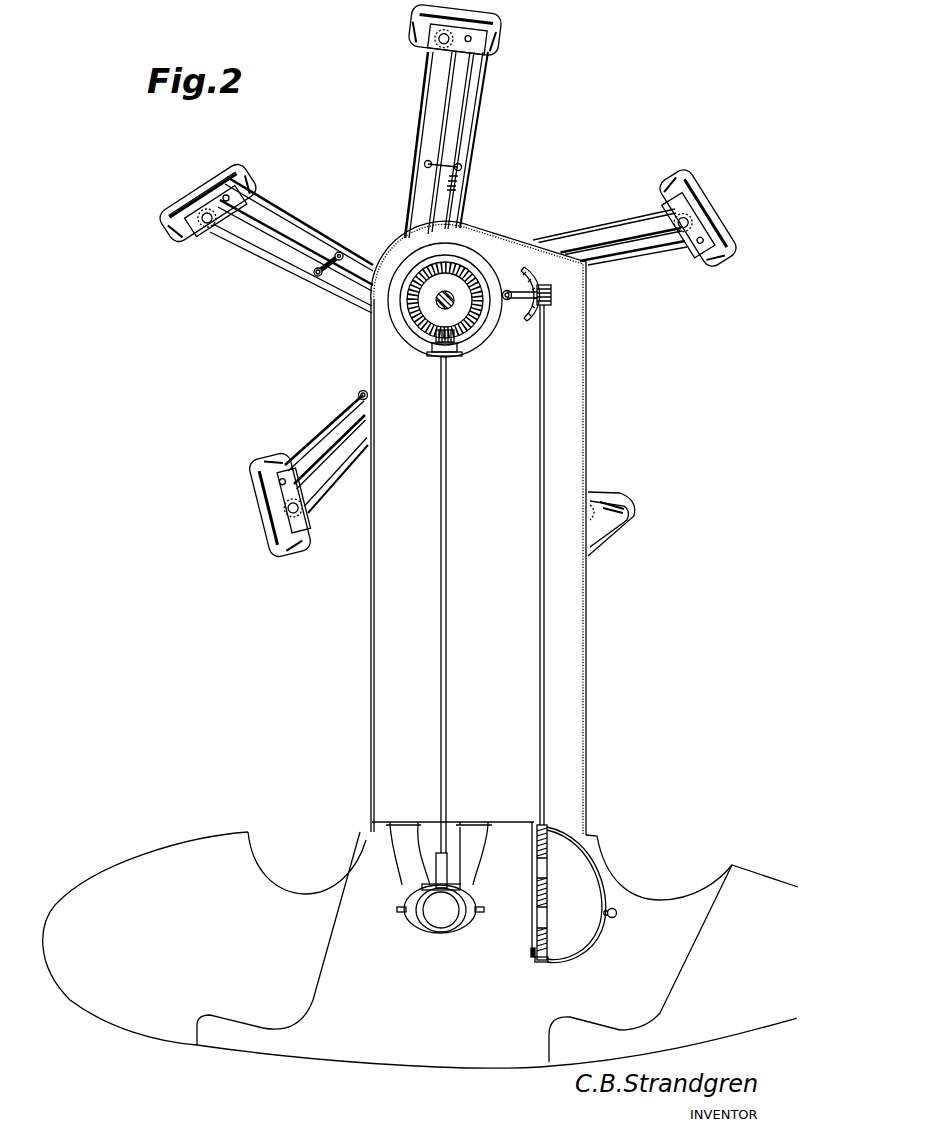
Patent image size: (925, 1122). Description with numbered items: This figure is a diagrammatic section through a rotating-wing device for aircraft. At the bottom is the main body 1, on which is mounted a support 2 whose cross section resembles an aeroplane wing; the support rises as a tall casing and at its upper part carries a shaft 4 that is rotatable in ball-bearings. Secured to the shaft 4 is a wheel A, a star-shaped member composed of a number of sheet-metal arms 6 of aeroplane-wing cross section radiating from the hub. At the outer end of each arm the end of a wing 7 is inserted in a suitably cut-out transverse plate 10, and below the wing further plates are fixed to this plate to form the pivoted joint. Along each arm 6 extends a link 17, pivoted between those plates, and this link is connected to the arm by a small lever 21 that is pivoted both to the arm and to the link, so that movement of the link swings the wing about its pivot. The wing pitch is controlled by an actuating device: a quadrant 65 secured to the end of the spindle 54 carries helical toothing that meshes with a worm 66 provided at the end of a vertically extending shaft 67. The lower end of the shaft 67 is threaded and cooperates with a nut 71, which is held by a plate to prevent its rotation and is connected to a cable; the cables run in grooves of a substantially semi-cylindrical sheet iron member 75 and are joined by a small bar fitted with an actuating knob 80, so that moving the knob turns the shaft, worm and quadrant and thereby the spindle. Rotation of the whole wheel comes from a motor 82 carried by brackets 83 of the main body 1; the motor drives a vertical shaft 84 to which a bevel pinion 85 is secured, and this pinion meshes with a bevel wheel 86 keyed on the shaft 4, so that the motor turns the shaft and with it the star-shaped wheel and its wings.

The main body 1 is at (438, 1060).
The support 2 is at (576, 694).
The shaft 4 is at (449, 296).
The arms 6 is at (290, 256).
The wings 7 is at (178, 218).
The transverse plates 10 is at (210, 182).
The link 17 is at (328, 250).
The small lever 21 is at (331, 263).
The spindle 54 is at (508, 291).
The quadrant 65 is at (522, 322).
The worm 66 is at (553, 296).
The vertically extending shaft 67 is at (546, 351).
The nut 71 is at (540, 916).
The sheet iron member 75 is at (596, 939).
The actuating knob 80 is at (616, 910).
The motor 82 is at (441, 918).
The brackets 83 is at (468, 872).
The vertical shaft 84 is at (446, 693).
The bevel pinion 85 is at (436, 357).
The bevel wheel 86 is at (433, 327).
The wheel A is at (264, 237).